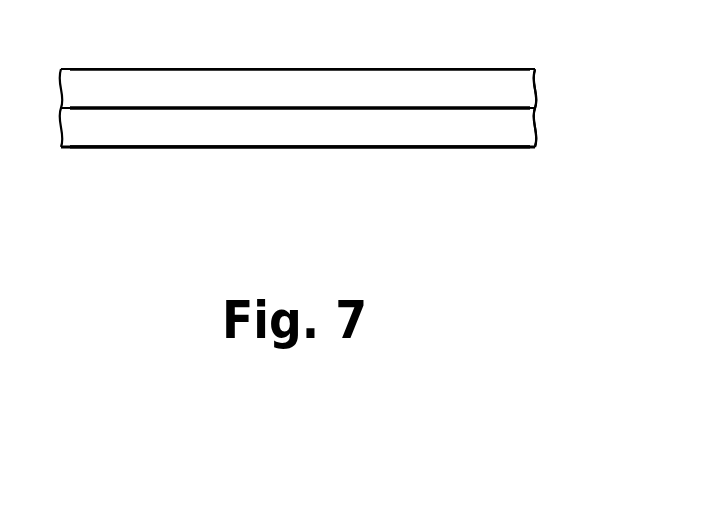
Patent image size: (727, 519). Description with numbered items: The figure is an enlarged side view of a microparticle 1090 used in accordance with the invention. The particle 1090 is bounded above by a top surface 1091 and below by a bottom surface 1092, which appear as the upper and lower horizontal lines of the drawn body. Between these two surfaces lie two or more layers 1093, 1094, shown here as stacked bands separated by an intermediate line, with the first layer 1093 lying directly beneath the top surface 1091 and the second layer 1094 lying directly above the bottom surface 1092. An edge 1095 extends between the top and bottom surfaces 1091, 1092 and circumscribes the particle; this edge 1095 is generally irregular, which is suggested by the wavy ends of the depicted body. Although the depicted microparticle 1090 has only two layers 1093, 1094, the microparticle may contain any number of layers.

The microparticle 1090 is at (384, 198).
The top surface 1091 is at (162, 68).
The bottom surface 1092 is at (156, 149).
The layer 1093 is at (369, 102).
The layer 1094 is at (297, 141).
The edge 1095 is at (537, 127).